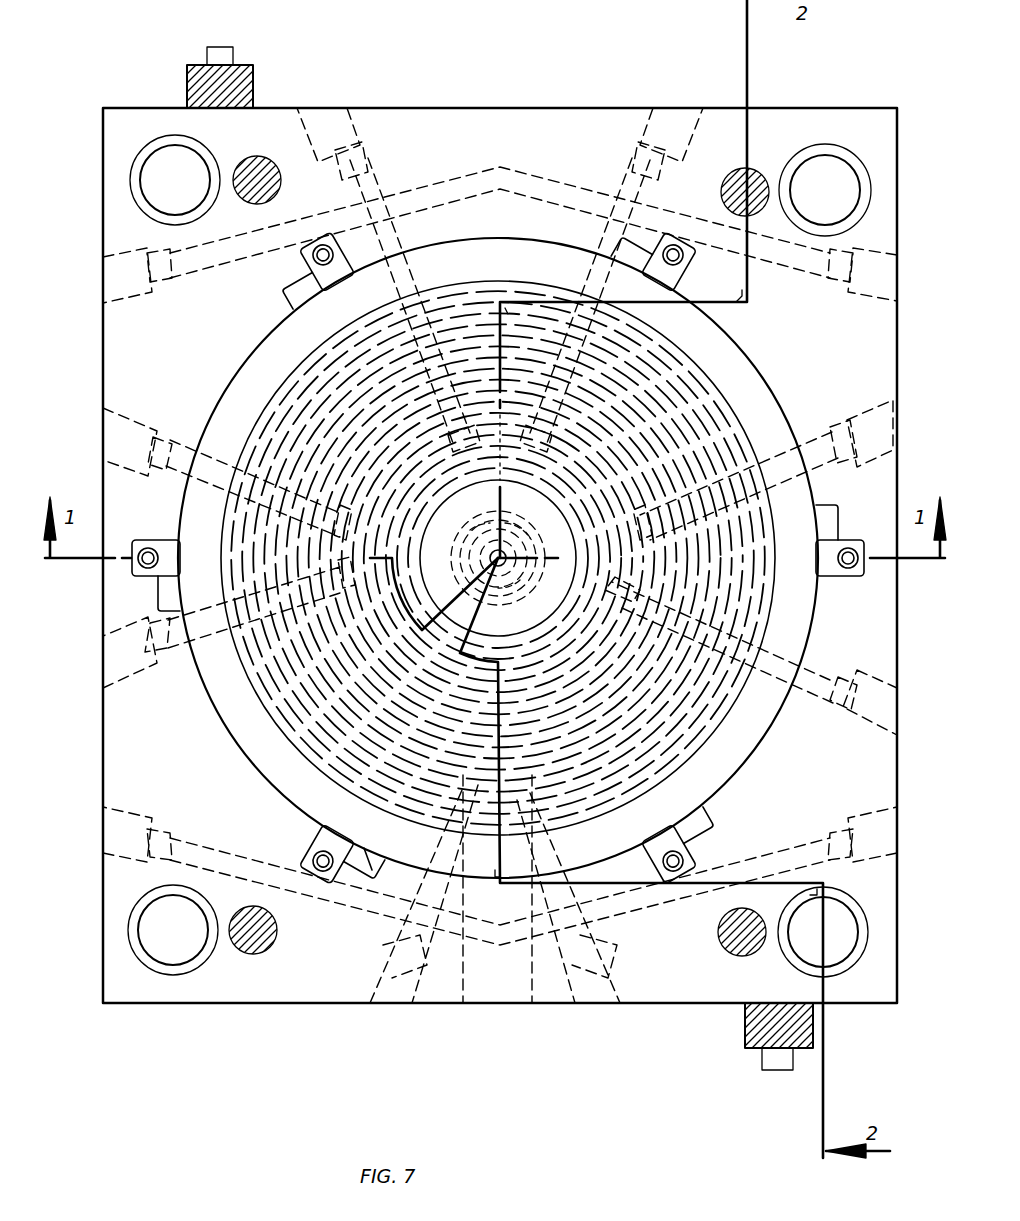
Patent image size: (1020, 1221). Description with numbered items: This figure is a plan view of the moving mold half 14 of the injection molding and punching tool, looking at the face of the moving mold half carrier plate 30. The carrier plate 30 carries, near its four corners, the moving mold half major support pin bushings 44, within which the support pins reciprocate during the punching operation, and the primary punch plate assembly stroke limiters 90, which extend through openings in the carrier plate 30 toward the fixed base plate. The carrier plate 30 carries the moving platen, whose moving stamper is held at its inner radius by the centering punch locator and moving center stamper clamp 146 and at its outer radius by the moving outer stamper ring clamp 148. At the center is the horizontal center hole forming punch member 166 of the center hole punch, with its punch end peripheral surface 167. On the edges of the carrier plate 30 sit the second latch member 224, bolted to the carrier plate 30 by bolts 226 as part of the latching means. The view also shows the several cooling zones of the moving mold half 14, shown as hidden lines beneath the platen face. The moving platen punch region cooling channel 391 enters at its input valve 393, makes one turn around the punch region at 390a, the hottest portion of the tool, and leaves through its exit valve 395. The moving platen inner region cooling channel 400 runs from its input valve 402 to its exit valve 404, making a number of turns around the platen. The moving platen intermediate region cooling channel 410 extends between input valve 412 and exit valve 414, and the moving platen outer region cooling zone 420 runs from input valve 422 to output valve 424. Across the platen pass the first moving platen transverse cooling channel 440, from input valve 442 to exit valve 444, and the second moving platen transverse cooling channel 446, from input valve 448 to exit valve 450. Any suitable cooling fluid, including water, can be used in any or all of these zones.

The moving mold half 14 is at (228, 1065).
The moving mold half carrier plate 30 is at (890, 785).
The moving mold half major support pin bushing 44 is at (150, 158).
The primary punch plate assembly stroke limiter 90 is at (268, 160).
The centering punch locator and moving center stamper clamp 146 is at (462, 582).
The moving outer stamper ring clamp 148 is at (228, 722).
The horizontal center hole forming punch member 166 is at (512, 548).
The punch end peripheral surface 167 is at (470, 540).
The second latch member 224 is at (745, 1030).
The bolts 226 is at (780, 1070).
The turn around the punch region 390a is at (525, 580).
The moving platen punch region cooling channel 391 is at (360, 175).
The input valve 393 is at (355, 130).
The exit valve 395 is at (655, 128).
The moving platen inner region cooling channel 400 is at (815, 665).
The input valve 402 is at (858, 716).
The exit valve 404 is at (855, 418).
The moving platen intermediate region cooling channel 410 is at (195, 448).
The input valve 412 is at (136, 418).
The exit valve 414 is at (135, 668).
The moving platen outer region cooling zone 420 is at (425, 884).
The input valve 422 is at (385, 962).
The output valve 424 is at (598, 962).
The first moving platen transverse cooling channel 440 is at (230, 262).
The input valve 442 is at (124, 305).
The exit valve 444 is at (853, 300).
The second moving platen transverse cooling channel 446 is at (235, 840).
The input valve 448 is at (142, 815).
The exit valve 450 is at (860, 815).